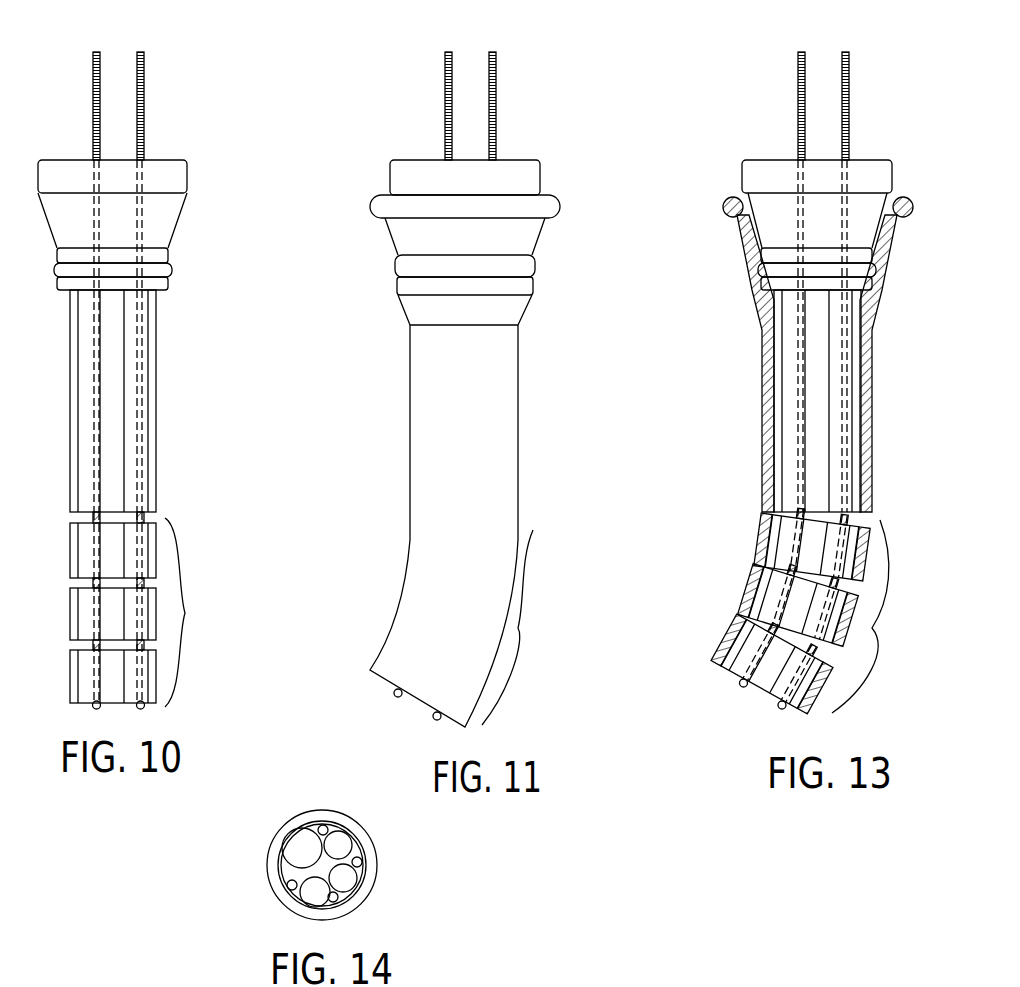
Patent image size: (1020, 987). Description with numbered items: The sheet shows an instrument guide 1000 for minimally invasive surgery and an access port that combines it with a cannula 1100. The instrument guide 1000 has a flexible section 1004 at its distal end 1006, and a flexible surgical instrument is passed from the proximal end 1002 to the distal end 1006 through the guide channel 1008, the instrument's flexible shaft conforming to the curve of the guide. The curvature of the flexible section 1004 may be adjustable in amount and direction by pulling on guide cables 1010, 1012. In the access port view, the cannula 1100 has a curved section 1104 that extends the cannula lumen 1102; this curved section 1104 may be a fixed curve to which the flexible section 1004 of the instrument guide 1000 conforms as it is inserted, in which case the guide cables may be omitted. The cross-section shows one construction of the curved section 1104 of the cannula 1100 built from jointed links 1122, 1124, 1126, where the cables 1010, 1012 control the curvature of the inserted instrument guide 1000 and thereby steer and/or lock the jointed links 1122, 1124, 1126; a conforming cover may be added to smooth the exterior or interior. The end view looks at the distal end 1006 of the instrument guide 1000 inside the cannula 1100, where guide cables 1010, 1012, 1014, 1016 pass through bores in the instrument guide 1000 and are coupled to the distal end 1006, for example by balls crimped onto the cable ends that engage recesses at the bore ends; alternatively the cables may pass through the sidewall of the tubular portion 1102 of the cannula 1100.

In FIG. 10, the instrument guide 1000 is at (188, 180).
In FIG. 11, the instrument guide 1000 is at (541, 180).
In FIG. 13, the instrument guide 1000 is at (745, 180).
In FIG. 14, the instrument guide 1000 is at (338, 822).
In FIG. 10, the proximal end 1002 is at (78, 160).
In FIG. 11, the proximal end 1002 is at (430, 160).
In FIG. 13, the proximal end 1002 is at (783, 160).
In FIG. 10, the flexible section 1004 is at (152, 609).
In FIG. 10, the distal end 1006 is at (112, 704).
In FIG. 11, the distal end 1006 is at (420, 707).
In FIG. 13, the distal end 1006 is at (760, 690).
In FIG. 10, the guide channel 1008 is at (112, 403).
In FIG. 10, the guide cable 1010 is at (92, 66).
In FIG. 11, the guide cable 1010 is at (445, 66).
In FIG. 13, the guide cable 1010 is at (797, 66).
In FIG. 14, the guide cable 1010 is at (285, 880).
In FIG. 10, the guide cable 1012 is at (145, 66).
In FIG. 11, the guide cable 1012 is at (497, 66).
In FIG. 13, the guide cable 1012 is at (850, 66).
In FIG. 14, the guide cable 1012 is at (340, 898).
In FIG. 14, the guide cable 1014 is at (315, 824).
In FIG. 14, the guide cable 1016 is at (362, 860).
In FIG. 11, the cannula 1100 is at (563, 207).
In FIG. 13, the cannula 1100 is at (722, 207).
In FIG. 14, the cannula 1100 is at (357, 821).
In FIG. 11, the cannula lumen 1102 is at (408, 479).
In FIG. 13, the cannula lumen 1102 is at (748, 608).
In FIG. 11, the curved section 1104 is at (527, 627).
In FIG. 13, the curved section 1104 is at (878, 616).
In FIG. 13, the jointed link 1122 is at (758, 540).
In FIG. 13, the jointed link 1124 is at (745, 590).
In FIG. 13, the jointed link 1126 is at (723, 644).